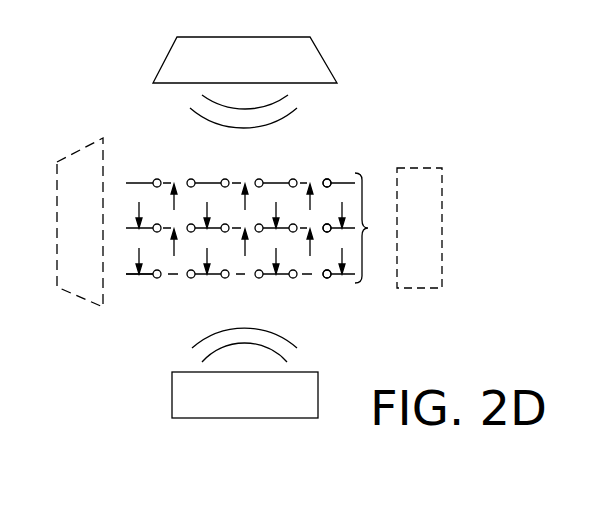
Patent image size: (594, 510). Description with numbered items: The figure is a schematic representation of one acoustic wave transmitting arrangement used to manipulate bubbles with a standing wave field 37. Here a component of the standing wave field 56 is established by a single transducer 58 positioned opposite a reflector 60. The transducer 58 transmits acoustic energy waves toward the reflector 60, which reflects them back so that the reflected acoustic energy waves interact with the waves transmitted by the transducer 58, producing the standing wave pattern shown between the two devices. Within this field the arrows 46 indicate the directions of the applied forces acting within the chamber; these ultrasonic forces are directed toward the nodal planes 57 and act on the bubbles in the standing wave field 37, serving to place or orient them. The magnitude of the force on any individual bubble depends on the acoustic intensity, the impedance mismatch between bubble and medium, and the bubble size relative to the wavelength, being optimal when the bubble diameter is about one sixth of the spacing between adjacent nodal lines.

The standing wave field 37 is at (370, 142).
The arrows 46 is at (341, 206).
The standing wave field 56 is at (376, 242).
The nodal planes 57 is at (145, 276).
The transducer 58 is at (292, 37).
The reflector 60 is at (318, 372).